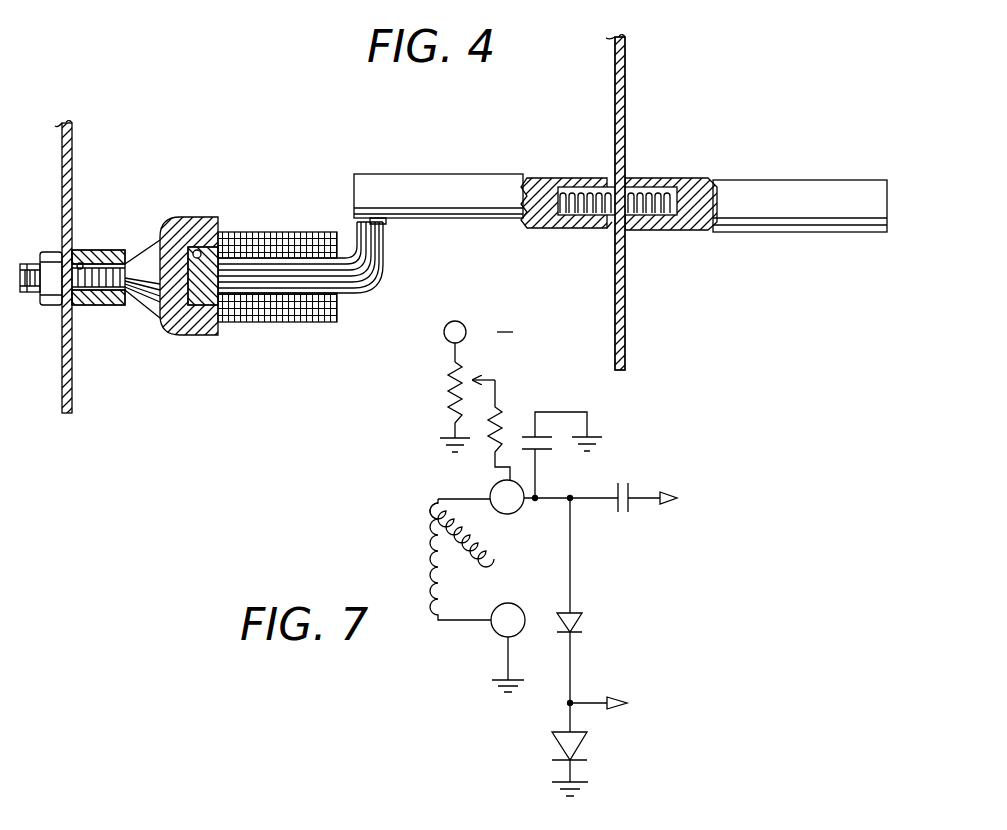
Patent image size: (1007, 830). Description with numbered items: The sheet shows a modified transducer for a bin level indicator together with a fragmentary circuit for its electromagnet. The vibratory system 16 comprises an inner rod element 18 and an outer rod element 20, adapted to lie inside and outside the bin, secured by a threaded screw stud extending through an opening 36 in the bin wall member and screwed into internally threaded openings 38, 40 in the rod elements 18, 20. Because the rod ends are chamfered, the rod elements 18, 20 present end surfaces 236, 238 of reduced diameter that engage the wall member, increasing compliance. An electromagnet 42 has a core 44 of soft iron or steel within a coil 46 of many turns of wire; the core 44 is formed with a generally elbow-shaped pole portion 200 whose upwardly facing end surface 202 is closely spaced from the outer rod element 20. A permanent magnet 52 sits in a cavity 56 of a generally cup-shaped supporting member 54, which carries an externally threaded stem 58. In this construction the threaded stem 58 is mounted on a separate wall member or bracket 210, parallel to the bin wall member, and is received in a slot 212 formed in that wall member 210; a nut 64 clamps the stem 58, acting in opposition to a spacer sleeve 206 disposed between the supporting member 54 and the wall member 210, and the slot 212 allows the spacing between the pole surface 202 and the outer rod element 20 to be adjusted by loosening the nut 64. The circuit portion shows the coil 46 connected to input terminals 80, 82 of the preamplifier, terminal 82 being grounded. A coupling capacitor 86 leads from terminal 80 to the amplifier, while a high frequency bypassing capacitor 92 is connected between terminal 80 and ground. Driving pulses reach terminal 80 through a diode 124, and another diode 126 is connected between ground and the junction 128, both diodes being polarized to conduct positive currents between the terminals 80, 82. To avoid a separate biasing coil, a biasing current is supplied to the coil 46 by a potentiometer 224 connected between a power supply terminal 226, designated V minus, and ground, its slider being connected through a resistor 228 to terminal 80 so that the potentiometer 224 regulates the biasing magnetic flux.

In FIG. 4, the vibratory system 16 is at (722, 172).
In FIG. 4, the inner vibratory element 18 is at (760, 190).
In FIG. 4, the outer vibratory element 20 is at (432, 190).
In FIG. 4, the opening 36 is at (634, 188).
In FIG. 4, the internally threaded opening 38 is at (663, 192).
In FIG. 4, the internally threaded opening 40 is at (565, 180).
In FIG. 4, the electromagnet 42 is at (335, 273).
In FIG. 7, the electromagnet 42 is at (434, 547).
In FIG. 4, the core 44 is at (247, 272).
In FIG. 4, the coil 46 is at (300, 322).
In FIG. 7, the coil 46 is at (436, 548).
In FIG. 4, the permanent magnet 52 is at (202, 305).
In FIG. 4, the cup-shaped supporting member 54 is at (178, 326).
In FIG. 4, the cavity 56 is at (199, 248).
In FIG. 4, the threaded stem 58 is at (30, 290).
In FIG. 4, the nut 64 is at (48, 255).
In FIG. 7, the input terminal 80 is at (502, 494).
In FIG. 7, the input terminal 82 is at (496, 636).
In FIG. 7, the coupling capacitor 86 is at (626, 514).
In FIG. 7, the high frequency bypassing capacitor 92 is at (550, 447).
In FIG. 7, the diode 124 is at (585, 625).
In FIG. 7, the diode 126 is at (583, 750).
In FIG. 7, the junction 128 is at (572, 703).
In FIG. 4, the elbow-shaped pole portion 200 is at (388, 272).
In FIG. 4, the end surface 202 is at (386, 224).
In FIG. 4, the spacer sleeve 206 is at (84, 300).
In FIG. 4, the wall member 210 is at (73, 383).
In FIG. 4, the slot 212 is at (82, 262).
In FIG. 7, the potentiometer 224 is at (450, 368).
In FIG. 7, the power supply terminal 226 is at (455, 320).
In FIG. 7, the resistor 228 is at (497, 410).
In FIG. 4, the end surface 236 is at (626, 185).
In FIG. 4, the end surface 238 is at (612, 228).